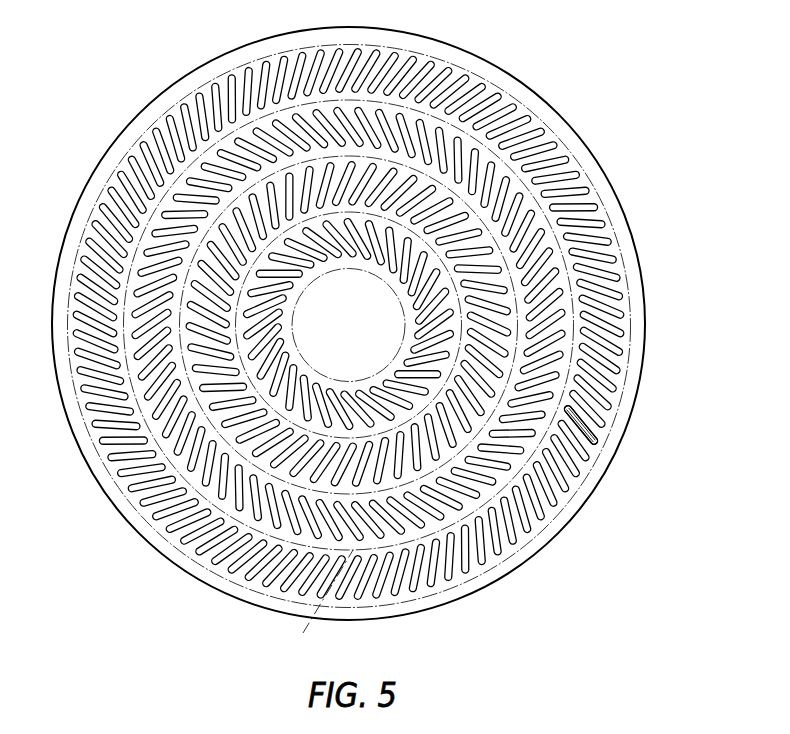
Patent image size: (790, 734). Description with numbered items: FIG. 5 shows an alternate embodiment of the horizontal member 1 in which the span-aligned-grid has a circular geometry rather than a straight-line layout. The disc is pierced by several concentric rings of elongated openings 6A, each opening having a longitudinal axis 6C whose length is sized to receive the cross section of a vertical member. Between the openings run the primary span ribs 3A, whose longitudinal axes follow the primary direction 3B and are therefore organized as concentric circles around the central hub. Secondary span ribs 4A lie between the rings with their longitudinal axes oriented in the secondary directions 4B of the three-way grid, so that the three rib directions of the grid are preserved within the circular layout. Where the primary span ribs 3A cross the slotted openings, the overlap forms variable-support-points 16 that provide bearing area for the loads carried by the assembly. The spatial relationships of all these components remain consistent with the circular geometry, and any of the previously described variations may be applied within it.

The horizontal member 1 is at (538, 555).
The variable-support-points 16 is at (557, 404).
The openings 6A is at (593, 430).
The longitudinal axis of the openings 6C is at (600, 460).
The primary span ribs 3A is at (463, 570).
The primary direction 3B is at (402, 583).
The secondary span ribs 4A is at (343, 582).
The secondary directions 4B is at (318, 613).